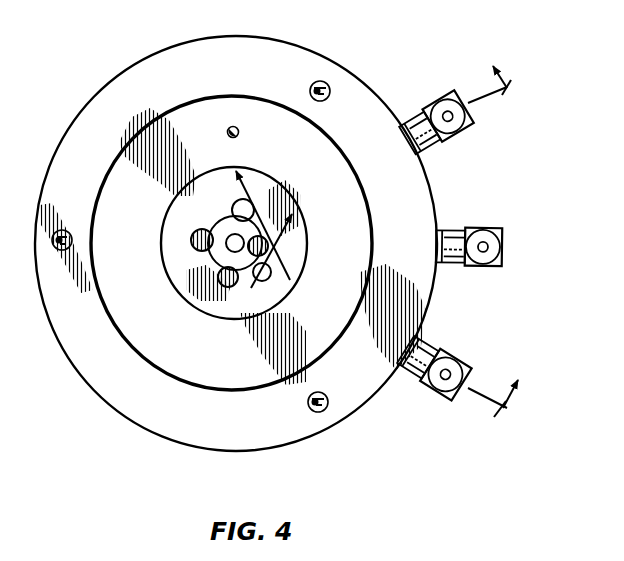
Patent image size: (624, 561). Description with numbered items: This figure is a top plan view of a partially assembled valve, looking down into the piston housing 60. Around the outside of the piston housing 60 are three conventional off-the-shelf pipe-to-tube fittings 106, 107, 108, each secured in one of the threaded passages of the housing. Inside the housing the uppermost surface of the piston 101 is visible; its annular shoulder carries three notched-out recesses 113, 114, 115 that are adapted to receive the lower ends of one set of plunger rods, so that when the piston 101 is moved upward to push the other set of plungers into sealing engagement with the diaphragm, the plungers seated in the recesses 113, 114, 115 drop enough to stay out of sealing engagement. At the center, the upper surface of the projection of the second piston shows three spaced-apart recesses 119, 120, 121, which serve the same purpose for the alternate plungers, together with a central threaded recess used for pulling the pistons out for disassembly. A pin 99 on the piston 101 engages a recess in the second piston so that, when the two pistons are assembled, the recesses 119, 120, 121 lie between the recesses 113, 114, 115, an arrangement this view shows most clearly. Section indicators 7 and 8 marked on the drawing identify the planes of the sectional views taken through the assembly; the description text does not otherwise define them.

The piston housing 60 is at (356, 88).
The piston 101 is at (128, 216).
The pin 99 is at (239, 131).
The pipe-to-tube fitting 106 is at (427, 107).
The pipe-to-tube fitting 107 is at (484, 227).
The pipe-to-tube fitting 108 is at (455, 357).
The notched-out recess 113 is at (205, 250).
The notched-out recess 114 is at (258, 278).
The notched-out recess 115 is at (283, 200).
The recess 119 is at (236, 213).
The recess 120 is at (232, 278).
The recess 121 is at (262, 248).
The section line 7- 7 is at (393, 302).
The section line 8- 8 is at (357, 157).